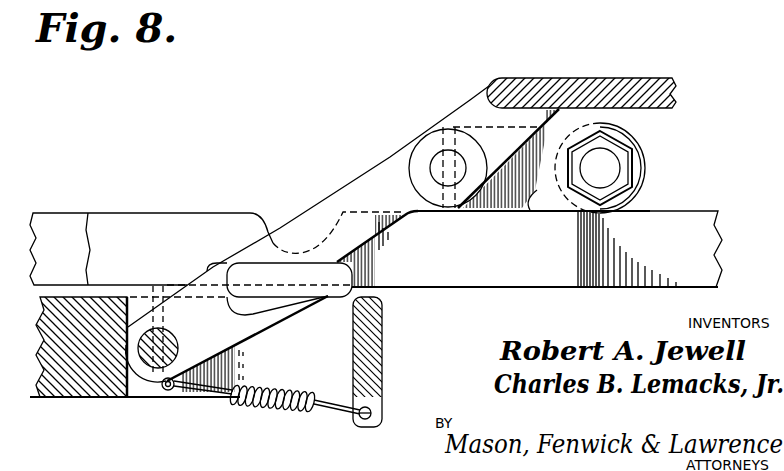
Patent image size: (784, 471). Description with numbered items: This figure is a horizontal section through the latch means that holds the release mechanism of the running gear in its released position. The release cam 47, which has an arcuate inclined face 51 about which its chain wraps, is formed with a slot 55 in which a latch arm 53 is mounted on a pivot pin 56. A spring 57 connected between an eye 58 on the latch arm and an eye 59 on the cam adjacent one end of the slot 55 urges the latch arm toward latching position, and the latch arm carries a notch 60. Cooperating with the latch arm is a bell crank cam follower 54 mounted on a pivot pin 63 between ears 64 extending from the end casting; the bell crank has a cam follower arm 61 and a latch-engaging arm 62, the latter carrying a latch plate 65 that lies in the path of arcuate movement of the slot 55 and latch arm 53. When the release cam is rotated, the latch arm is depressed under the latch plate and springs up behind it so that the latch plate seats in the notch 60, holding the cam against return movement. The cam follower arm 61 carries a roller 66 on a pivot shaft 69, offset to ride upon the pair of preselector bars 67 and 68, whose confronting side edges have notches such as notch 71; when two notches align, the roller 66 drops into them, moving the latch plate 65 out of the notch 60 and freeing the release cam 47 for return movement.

The release cam 47 is at (63, 372).
The arcuate inclined face 51 is at (382, 370).
The latch arm 53 is at (233, 341).
The bell crank cam follower 54 is at (388, 156).
The slot 55 is at (140, 388).
The pivot pin 56 is at (176, 344).
The spring 57 is at (257, 408).
The eye 58 is at (161, 393).
The eye 59 is at (362, 420).
The notch 60 is at (253, 315).
The cam follower arm 61 is at (531, 195).
The latch-engaging arm 62 is at (367, 222).
The pivot pin 63 is at (462, 166).
The ears 64 is at (477, 99).
The latch plate 65 is at (243, 270).
The roller 66 is at (645, 150).
The preselector bar 67 is at (72, 224).
The preselector bar 68 is at (136, 224).
The pivot shaft 69 is at (612, 171).
The notch 71 is at (263, 223).